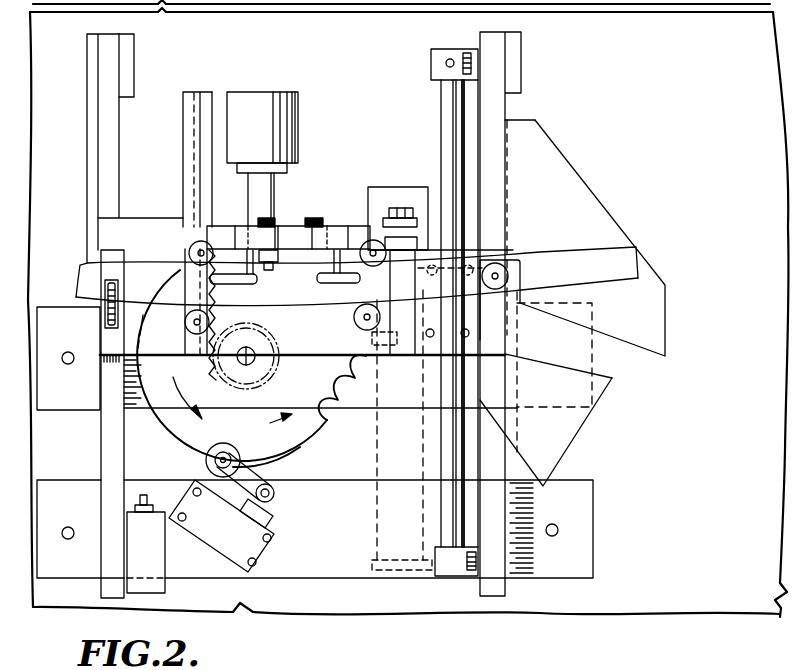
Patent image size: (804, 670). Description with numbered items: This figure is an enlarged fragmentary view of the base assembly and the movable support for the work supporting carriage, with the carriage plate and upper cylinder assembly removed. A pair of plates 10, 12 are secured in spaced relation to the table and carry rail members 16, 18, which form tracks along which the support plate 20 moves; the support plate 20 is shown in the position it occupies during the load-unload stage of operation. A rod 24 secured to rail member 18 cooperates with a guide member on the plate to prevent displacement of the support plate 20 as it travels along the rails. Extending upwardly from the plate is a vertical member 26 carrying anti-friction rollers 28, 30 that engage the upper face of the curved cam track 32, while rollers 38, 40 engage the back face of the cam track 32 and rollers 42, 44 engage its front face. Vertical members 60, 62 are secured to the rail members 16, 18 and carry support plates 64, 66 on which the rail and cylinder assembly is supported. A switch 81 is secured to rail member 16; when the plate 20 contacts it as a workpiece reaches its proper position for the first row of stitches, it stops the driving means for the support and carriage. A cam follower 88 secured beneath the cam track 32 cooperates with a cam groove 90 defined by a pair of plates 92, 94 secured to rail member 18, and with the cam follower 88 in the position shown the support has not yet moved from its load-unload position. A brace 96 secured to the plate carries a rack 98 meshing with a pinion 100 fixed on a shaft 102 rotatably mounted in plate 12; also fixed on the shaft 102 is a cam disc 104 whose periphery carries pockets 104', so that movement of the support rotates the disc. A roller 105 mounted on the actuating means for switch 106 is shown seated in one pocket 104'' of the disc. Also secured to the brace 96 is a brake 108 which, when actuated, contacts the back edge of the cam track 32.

The plate 10 is at (583, 558).
The plate 12 is at (58, 405).
The rail member 16 is at (110, 455).
The rail member 18 is at (510, 583).
The support plate 20 is at (363, 342).
The rod 24 is at (440, 128).
The vertical member 26 is at (327, 224).
The anti-friction roller 28 is at (248, 284).
The anti-friction roller 30 is at (330, 284).
The curved cam track 32 is at (82, 288).
The anti-friction roller 38 is at (190, 246).
The anti-friction roller 40 is at (373, 267).
The anti-friction roller 42 is at (185, 323).
The anti-friction roller 44 is at (354, 318).
The vertical member 60 is at (128, 52).
The vertical member 62 is at (514, 60).
The support plate 64 is at (117, 152).
The support plate 66 is at (502, 110).
The switch 81 is at (162, 577).
The cam follower 88 is at (505, 263).
The cam groove 90 is at (597, 354).
The plate 92 is at (573, 433).
The plate 94 is at (660, 306).
The brace 96 is at (188, 97).
The rack 98 is at (213, 92).
The pinion 100 is at (232, 376).
The shaft 102 is at (264, 369).
The cam disc 104 is at (250, 368).
The pockets 104' is at (350, 395).
The pocket 104'' is at (266, 453).
The roller 105 is at (226, 452).
The switch 106 is at (276, 534).
The brake 108 is at (299, 154).